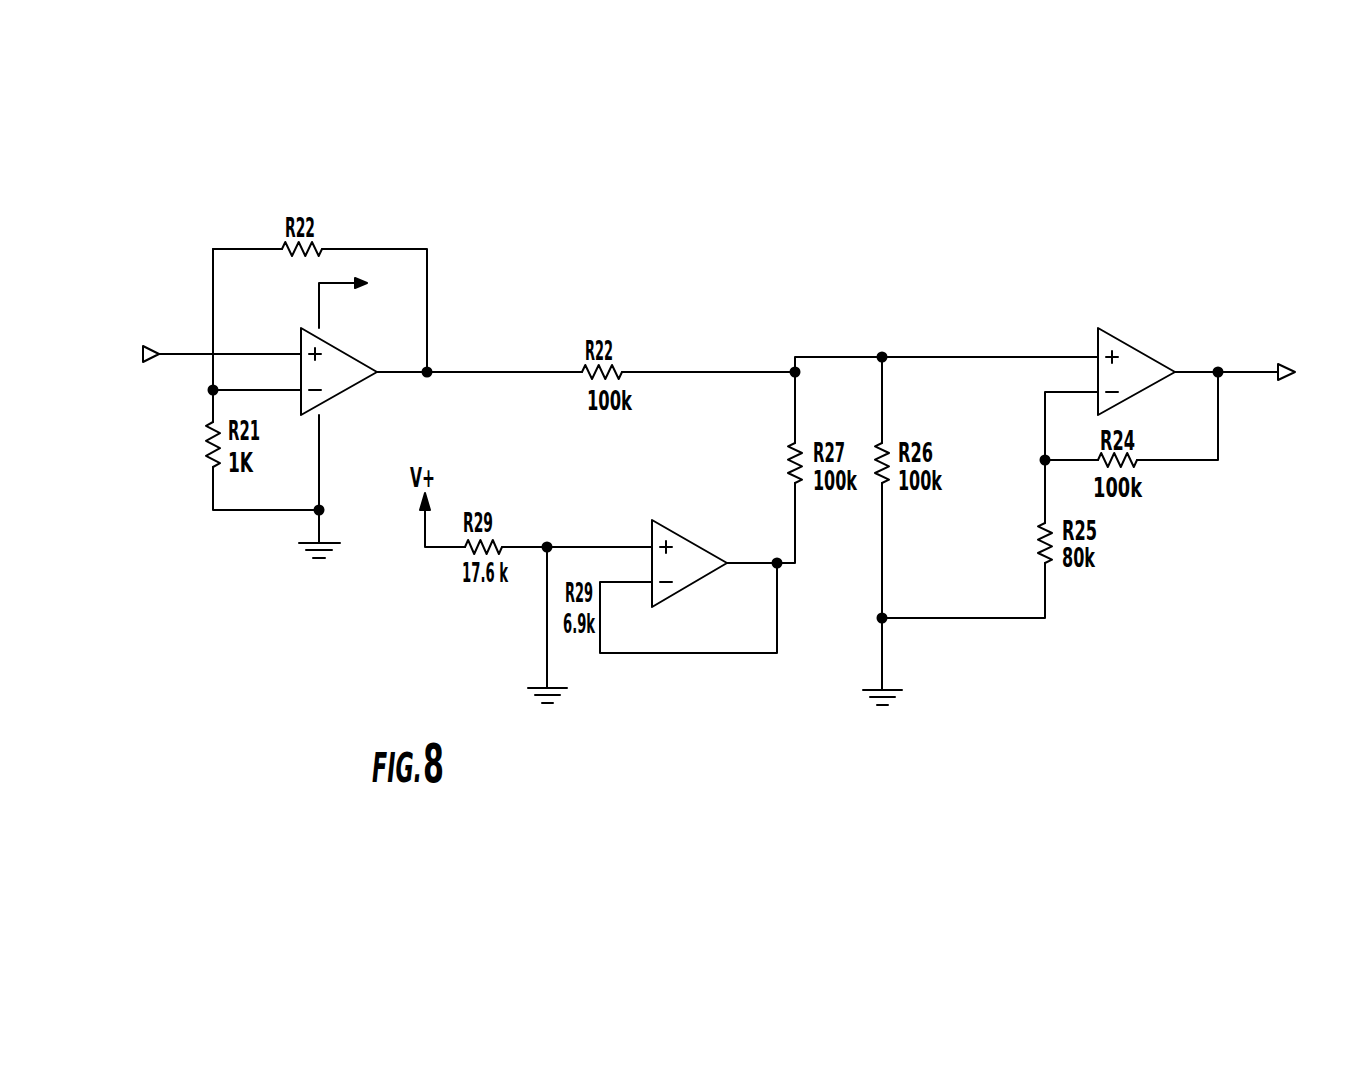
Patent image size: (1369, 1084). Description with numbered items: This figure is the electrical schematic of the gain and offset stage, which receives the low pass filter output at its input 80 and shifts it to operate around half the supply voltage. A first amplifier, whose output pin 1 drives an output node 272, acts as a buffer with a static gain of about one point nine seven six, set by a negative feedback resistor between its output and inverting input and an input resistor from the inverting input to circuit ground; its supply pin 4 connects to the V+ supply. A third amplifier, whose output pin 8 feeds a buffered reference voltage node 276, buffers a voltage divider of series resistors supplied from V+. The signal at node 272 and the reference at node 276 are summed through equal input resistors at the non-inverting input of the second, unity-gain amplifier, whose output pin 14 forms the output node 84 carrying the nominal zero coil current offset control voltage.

The input 80 is at (175, 357).
The output node 84 is at (1227, 375).
The output node 272 is at (467, 372).
The buffered reference voltage node 276 is at (797, 538).
The op amp pin 1 output 1 is at (355, 371).
The op amp pin 4 supply 4 is at (347, 297).
The op amp pin 8 output 8 is at (696, 563).
The op amp pin 14 output 14 is at (1147, 371).